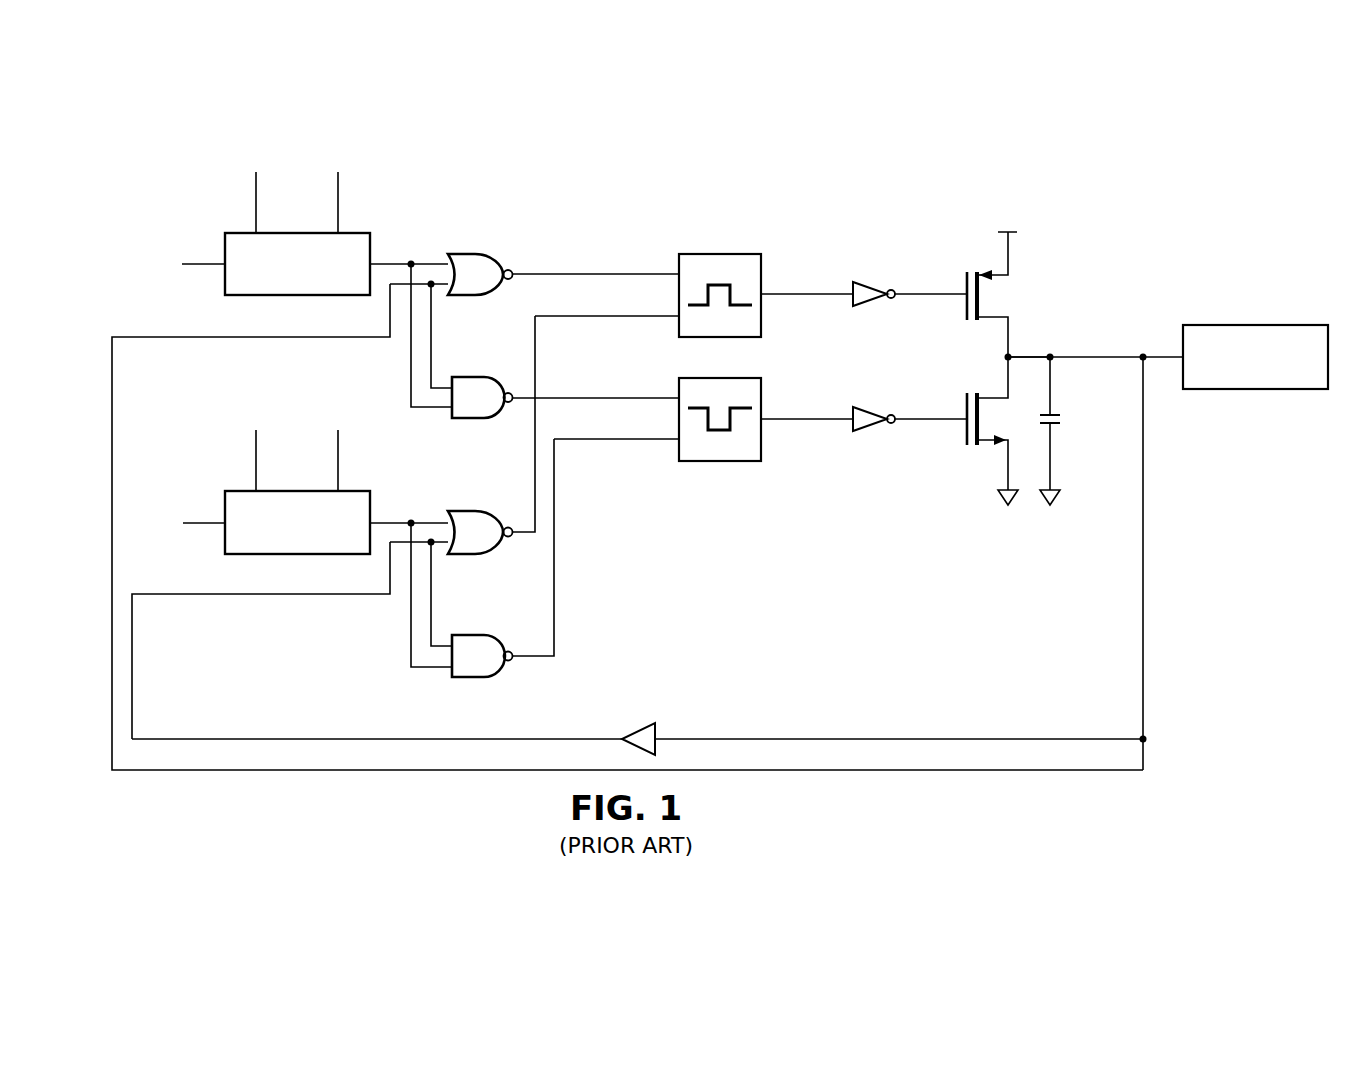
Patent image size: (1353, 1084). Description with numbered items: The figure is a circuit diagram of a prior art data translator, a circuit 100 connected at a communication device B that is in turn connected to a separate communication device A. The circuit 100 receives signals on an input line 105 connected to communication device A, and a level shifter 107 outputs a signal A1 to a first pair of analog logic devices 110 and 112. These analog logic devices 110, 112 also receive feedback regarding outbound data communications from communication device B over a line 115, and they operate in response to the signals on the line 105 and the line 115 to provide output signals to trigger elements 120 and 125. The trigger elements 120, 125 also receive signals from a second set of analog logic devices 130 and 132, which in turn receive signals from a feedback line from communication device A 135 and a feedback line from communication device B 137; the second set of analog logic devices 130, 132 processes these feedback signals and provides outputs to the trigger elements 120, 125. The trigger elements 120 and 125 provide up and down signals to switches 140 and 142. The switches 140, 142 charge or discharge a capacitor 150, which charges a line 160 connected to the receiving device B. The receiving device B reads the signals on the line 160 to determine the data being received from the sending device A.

The circuit 100 is at (1122, 212).
The input line 105 is at (208, 262).
The level shifter 107 is at (296, 232).
The analog logic device 110 is at (471, 253).
The analog logic device 112 is at (471, 376).
The line 115 is at (250, 339).
The trigger element 120 is at (721, 254).
The trigger element 125 is at (720, 462).
The analog logic device 130 is at (470, 556).
The analog logic device 132 is at (470, 679).
The feedback line from communication device A 135 is at (205, 518).
The feedback line from communication device B 137 is at (250, 597).
The switch 140 is at (962, 306).
The switch 142 is at (962, 428).
The capacitor 150 is at (1063, 420).
The line 160 is at (1030, 353).